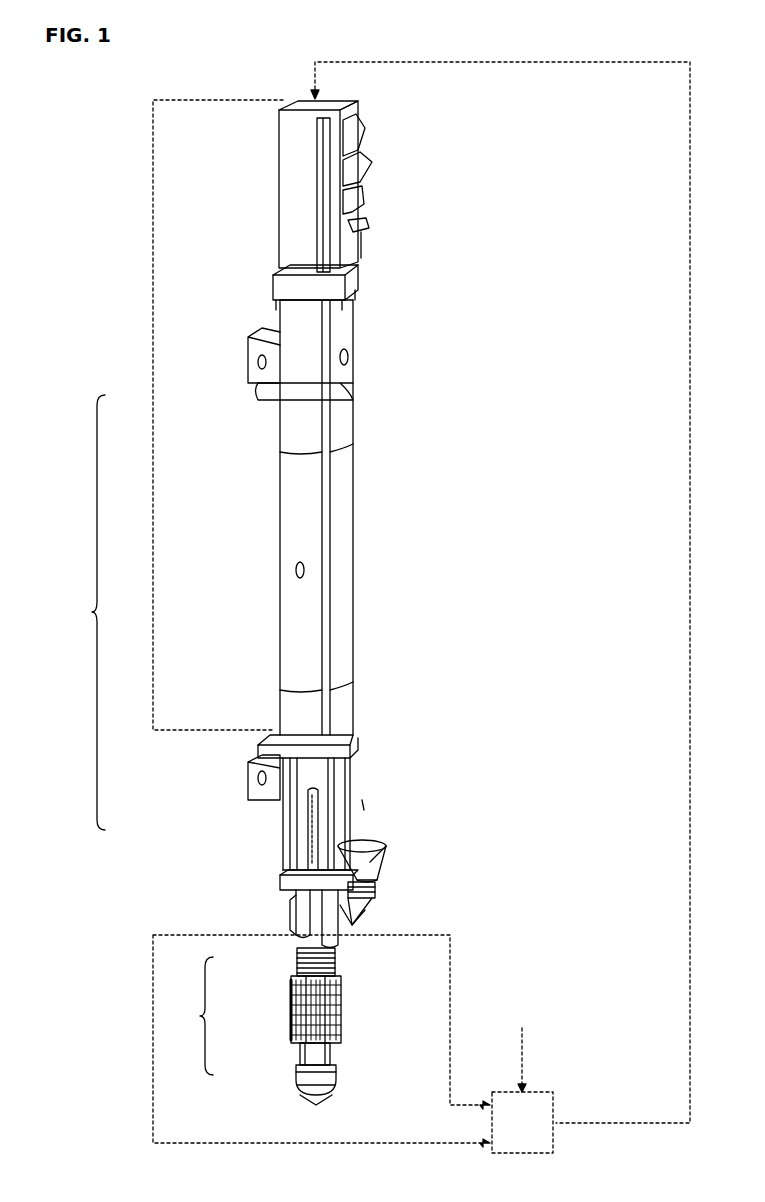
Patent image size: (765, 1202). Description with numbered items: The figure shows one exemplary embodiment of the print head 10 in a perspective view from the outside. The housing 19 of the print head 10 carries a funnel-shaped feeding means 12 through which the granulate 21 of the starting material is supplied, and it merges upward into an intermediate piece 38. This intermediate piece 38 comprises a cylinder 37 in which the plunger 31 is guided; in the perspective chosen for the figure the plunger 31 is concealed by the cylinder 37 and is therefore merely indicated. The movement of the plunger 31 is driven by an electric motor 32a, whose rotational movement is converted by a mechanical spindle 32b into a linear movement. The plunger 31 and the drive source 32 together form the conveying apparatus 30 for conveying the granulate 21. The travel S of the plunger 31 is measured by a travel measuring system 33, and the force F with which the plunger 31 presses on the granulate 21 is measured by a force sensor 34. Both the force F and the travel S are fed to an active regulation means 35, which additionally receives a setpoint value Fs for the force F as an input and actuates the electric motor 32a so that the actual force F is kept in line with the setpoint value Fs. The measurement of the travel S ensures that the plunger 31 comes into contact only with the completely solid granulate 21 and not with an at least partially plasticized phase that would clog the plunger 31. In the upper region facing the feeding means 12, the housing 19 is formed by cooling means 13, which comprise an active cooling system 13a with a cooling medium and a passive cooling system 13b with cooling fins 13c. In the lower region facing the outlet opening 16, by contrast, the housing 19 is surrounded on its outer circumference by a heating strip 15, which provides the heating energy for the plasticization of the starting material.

The print head 10 is at (470, 203).
The funnel-shaped feeding means 12 is at (380, 880).
The cooling means 13 is at (292, 1038).
The active cooling system 13a is at (290, 960).
The passive cooling system 13b is at (288, 998).
The cooling fins 13c is at (340, 990).
The heating strip 15 is at (330, 1075).
The outlet opening 16 is at (316, 1100).
The housing 19 is at (290, 930).
The granulate 21 is at (365, 836).
The conveying apparatus 30 is at (81, 612).
The plunger 31 is at (320, 795).
The drive source 32 is at (153, 420).
The electric motor 32a is at (300, 175).
The mechanical spindle 32b is at (300, 625).
The travel measuring system 33 is at (290, 895).
The force sensor 34 is at (370, 912).
The active regulation means 35 is at (536, 1136).
The cylinder 37 is at (313, 825).
The intermediate piece 38 is at (345, 785).
The force F is at (365, 800).
The setpoint value for the force Fs is at (536, 1059).
The travel of the plunger S is at (153, 993).